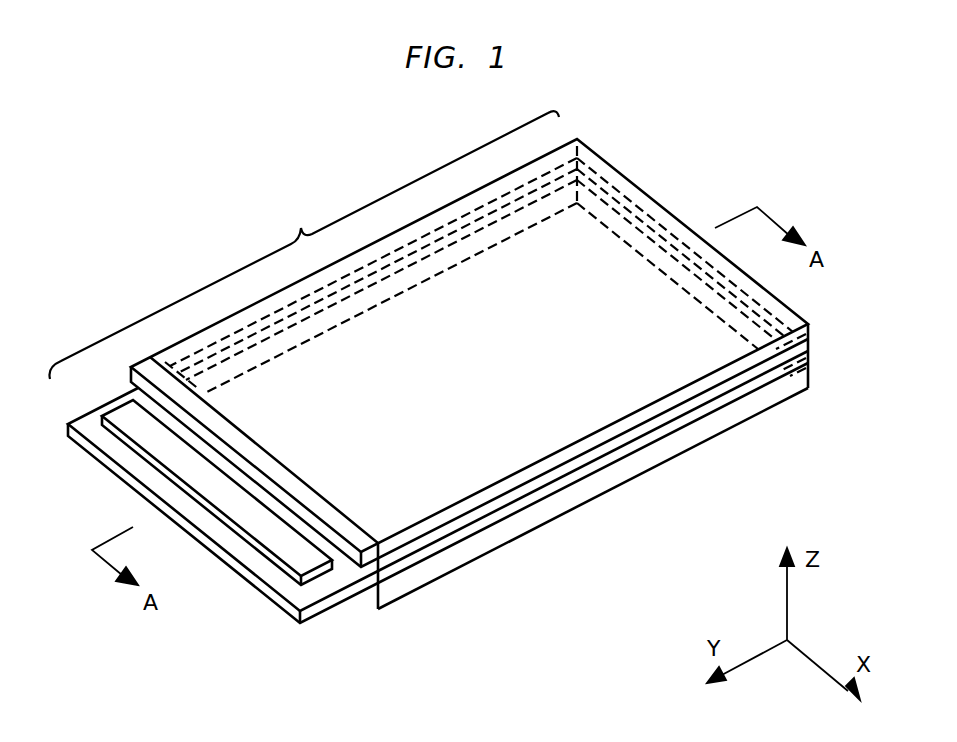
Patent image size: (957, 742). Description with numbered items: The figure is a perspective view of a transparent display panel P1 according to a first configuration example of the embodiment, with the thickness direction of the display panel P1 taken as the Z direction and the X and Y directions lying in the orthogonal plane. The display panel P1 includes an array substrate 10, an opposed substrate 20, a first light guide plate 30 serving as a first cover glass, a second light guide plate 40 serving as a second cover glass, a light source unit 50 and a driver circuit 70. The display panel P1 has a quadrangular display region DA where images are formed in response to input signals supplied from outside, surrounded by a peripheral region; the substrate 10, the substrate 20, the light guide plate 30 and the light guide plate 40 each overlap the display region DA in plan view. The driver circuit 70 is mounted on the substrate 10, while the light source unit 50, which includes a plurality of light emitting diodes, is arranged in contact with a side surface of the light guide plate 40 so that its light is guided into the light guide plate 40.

The substrate 10 is at (627, 450).
The substrate 20 is at (670, 417).
The light guide plate 30 is at (587, 485).
The light guide plate 40 is at (712, 385).
The light source unit 50 is at (370, 558).
The driver circuit 70 is at (288, 545).
The display panel P1 is at (304, 245).
The display region DA is at (558, 258).